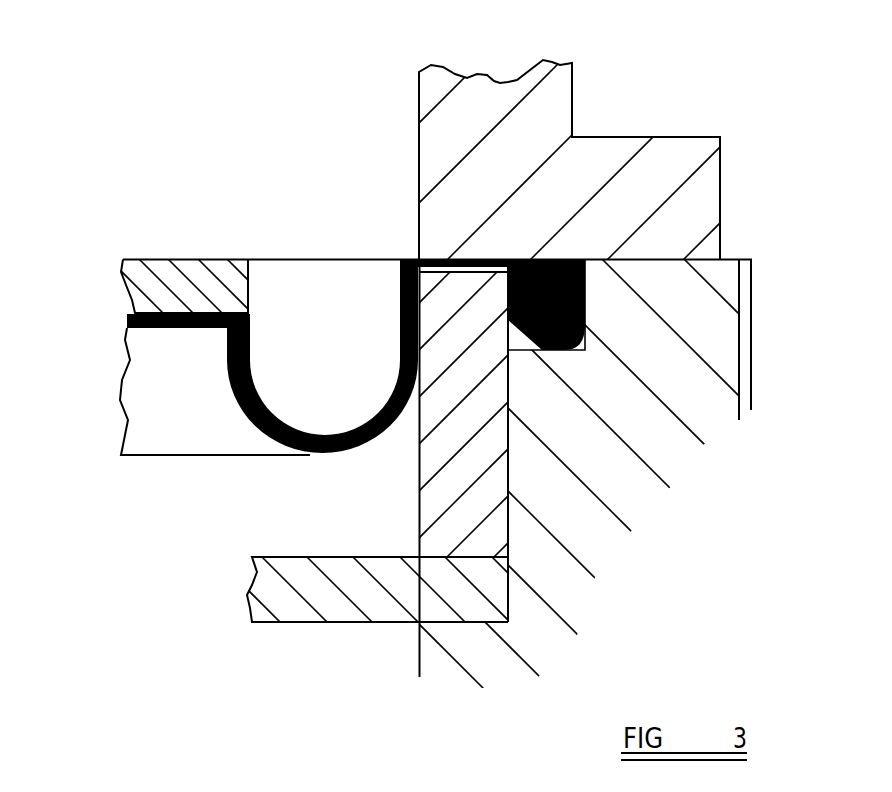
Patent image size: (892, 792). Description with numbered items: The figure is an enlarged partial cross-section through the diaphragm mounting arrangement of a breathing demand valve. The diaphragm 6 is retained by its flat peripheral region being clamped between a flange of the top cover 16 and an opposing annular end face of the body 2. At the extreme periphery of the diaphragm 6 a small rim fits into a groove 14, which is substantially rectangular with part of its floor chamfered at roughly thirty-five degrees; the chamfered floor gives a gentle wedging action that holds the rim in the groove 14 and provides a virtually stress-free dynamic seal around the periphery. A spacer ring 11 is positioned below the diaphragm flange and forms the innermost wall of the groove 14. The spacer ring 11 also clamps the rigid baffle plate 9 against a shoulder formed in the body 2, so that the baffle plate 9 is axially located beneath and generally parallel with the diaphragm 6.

The cover 16 is at (647, 165).
The body 2 is at (713, 318).
The diaphragm 6 is at (212, 288).
The spacer ring 11 is at (420, 478).
The baffle plate 9 is at (258, 590).
The groove 14 is at (587, 300).